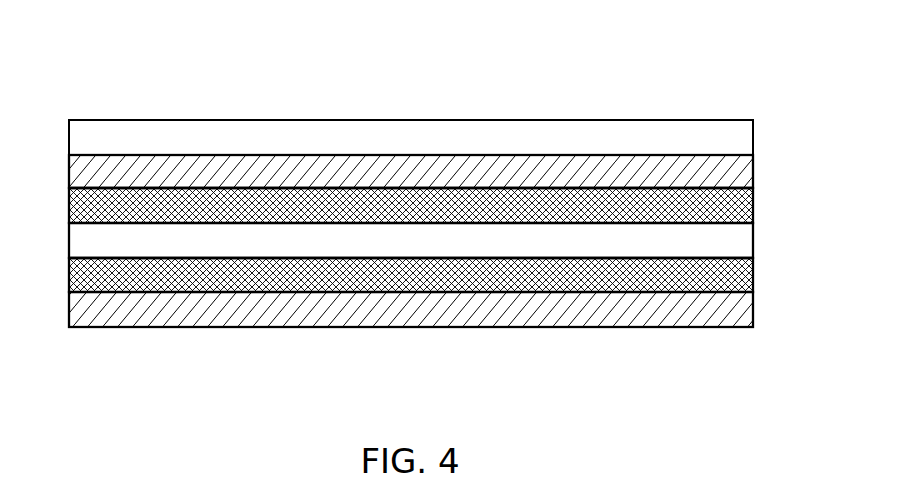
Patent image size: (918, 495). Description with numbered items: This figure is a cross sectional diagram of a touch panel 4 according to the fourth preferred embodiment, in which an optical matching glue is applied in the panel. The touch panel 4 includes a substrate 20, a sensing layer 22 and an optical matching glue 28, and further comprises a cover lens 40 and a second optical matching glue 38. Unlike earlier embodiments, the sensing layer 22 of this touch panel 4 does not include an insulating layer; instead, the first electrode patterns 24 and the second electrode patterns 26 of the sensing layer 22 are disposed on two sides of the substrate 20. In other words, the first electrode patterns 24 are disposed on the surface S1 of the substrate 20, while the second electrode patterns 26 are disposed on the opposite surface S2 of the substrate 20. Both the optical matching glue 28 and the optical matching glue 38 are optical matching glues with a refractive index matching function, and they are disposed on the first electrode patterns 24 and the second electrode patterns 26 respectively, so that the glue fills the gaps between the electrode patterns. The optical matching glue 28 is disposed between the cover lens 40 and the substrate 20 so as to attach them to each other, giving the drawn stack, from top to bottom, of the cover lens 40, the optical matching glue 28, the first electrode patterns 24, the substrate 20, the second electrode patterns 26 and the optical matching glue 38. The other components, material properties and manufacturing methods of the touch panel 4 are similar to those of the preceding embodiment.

The touch panel 4 is at (648, 82).
The cover lens 40 is at (742, 134).
The optical matching glue 28 is at (745, 168).
The first electrode patterns 24 is at (747, 205).
The substrate 20 is at (86, 243).
The second electrode patterns 26 is at (747, 274).
The optical matching glue 38 is at (745, 309).
The sensing layer 22 is at (802, 193).
The surface S1 is at (69, 210).
The surface S2 is at (69, 268).